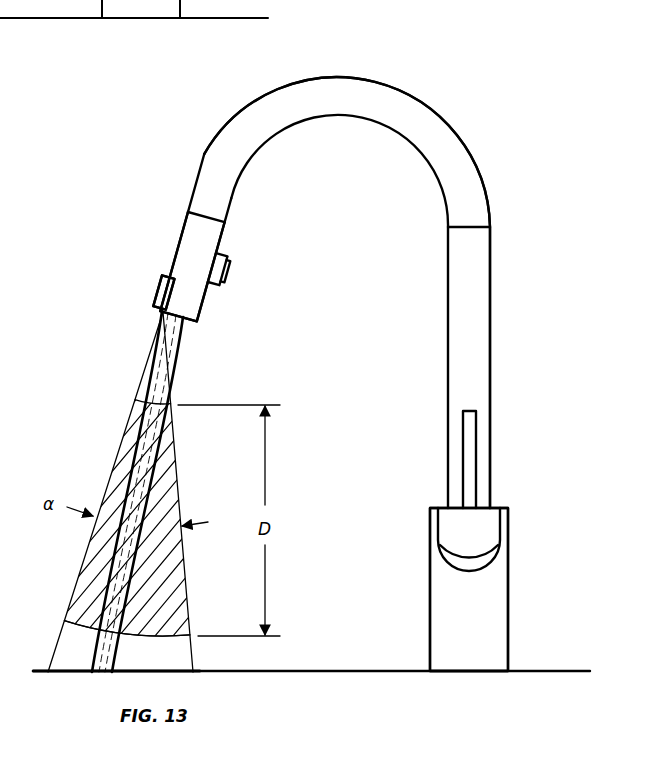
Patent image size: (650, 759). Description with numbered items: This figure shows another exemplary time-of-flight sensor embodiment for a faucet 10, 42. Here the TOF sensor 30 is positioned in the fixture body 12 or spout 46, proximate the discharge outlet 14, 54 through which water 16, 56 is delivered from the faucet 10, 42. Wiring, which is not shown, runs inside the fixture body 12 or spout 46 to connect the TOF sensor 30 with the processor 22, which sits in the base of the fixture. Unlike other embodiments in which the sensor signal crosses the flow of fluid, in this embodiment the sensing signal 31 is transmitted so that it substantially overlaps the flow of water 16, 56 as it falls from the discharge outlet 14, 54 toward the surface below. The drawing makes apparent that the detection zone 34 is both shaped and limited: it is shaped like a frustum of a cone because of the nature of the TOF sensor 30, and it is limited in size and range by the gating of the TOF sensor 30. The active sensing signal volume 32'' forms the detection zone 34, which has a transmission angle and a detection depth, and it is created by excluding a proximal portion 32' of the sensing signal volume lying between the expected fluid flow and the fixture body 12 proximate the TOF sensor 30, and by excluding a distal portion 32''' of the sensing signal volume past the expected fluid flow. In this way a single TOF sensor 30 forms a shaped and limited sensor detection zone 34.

The faucet 10 is at (313, 345).
The faucet 42 is at (370, 345).
The fixture body 12 is at (277, 104).
The spout 46 is at (218, 157).
The TOF sensor 30 is at (163, 292).
The discharge outlet 14 is at (162, 320).
The discharge outlet 54 is at (110, 302).
The processor 22 is at (482, 480).
The sensing signal 31 is at (143, 380).
The detection zone 34 is at (160, 558).
The excluded proximal portion of the sensing signal volume 32' is at (105, 492).
The active sensing signal volume 32'' is at (114, 492).
The excluded distal portion of the sensing signal volume 32''' is at (172, 643).
The water 16 is at (93, 655).
The water 56 is at (116, 690).